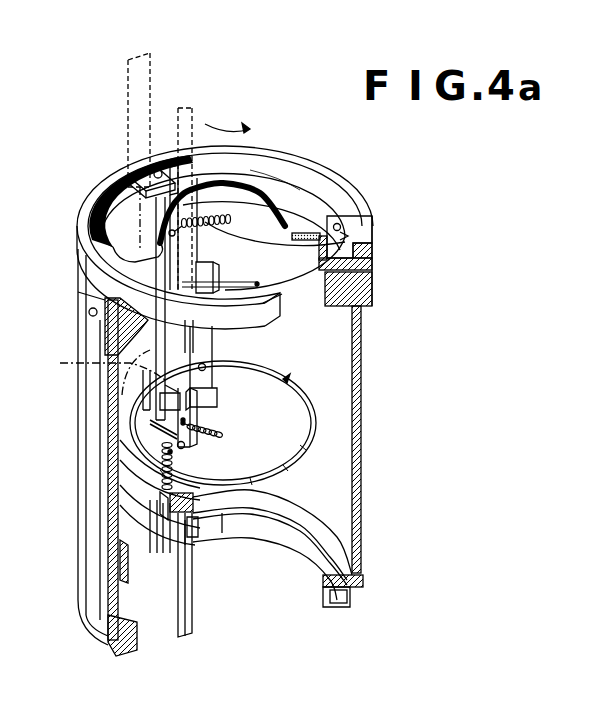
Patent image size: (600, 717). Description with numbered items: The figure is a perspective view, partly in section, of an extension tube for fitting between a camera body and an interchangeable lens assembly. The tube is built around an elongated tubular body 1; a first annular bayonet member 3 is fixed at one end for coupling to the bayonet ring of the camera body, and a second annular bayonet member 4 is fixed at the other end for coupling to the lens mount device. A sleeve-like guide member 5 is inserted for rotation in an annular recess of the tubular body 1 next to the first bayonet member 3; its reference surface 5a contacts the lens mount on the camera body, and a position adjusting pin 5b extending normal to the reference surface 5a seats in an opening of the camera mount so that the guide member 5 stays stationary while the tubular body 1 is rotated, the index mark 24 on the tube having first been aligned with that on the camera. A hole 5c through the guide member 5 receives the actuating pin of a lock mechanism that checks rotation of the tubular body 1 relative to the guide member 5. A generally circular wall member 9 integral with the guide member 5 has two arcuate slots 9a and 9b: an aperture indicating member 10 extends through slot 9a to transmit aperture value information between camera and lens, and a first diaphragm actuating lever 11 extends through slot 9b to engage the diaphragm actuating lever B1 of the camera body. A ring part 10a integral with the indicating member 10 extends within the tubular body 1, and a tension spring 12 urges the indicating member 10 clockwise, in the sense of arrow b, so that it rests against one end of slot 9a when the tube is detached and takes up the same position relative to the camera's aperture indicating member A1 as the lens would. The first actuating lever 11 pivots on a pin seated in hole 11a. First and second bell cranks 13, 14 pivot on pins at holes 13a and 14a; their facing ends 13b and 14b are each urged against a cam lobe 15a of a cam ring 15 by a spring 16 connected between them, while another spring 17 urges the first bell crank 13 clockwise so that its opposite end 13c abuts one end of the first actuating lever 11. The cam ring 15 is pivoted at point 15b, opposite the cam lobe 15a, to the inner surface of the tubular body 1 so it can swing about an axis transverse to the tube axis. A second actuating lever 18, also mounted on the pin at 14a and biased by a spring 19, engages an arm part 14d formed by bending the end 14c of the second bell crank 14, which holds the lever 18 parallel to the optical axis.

The tubular body 1 is at (350, 293).
The first annular bayonet member 3 is at (362, 252).
The second annular bayonet member 4 is at (110, 650).
The guide member 5 is at (362, 276).
The reference surface 5a is at (308, 200).
The position adjusting pin 5b is at (341, 227).
The hole 5c is at (287, 224).
The wall member 9 is at (308, 218).
The slot 9a is at (118, 252).
The slot 9b is at (272, 304).
The aperture indicating member 10 is at (172, 178).
The ring part 10a is at (150, 368).
The first diaphragm actuating lever 11 is at (213, 280).
The pin 11a is at (209, 389).
The tension spring 12 is at (232, 219).
The first bell crank 13 is at (152, 428).
The pin 13a is at (188, 432).
The end of first bell crank 13b is at (152, 448).
The opposite end of first bell crank 13c is at (178, 396).
The second bell crank 14 is at (152, 520).
The pin 14a is at (150, 545).
The end of second bell crank 14b is at (152, 503).
The end of second bell crank 14c is at (189, 522).
The arm part 14d is at (199, 528).
The cam ring 15 is at (312, 412).
The cam lobe 15a is at (153, 480).
The pivot point 15b is at (286, 379).
The spring 16 is at (184, 446).
The spring 17 is at (218, 434).
The second actuating lever 18 is at (193, 624).
The spring 19 is at (166, 550).
The index mark 24 is at (86, 292).
The aperture indicating member A1 is at (148, 55).
The diaphragm actuating lever B1 is at (185, 110).
The direction b is at (227, 114).